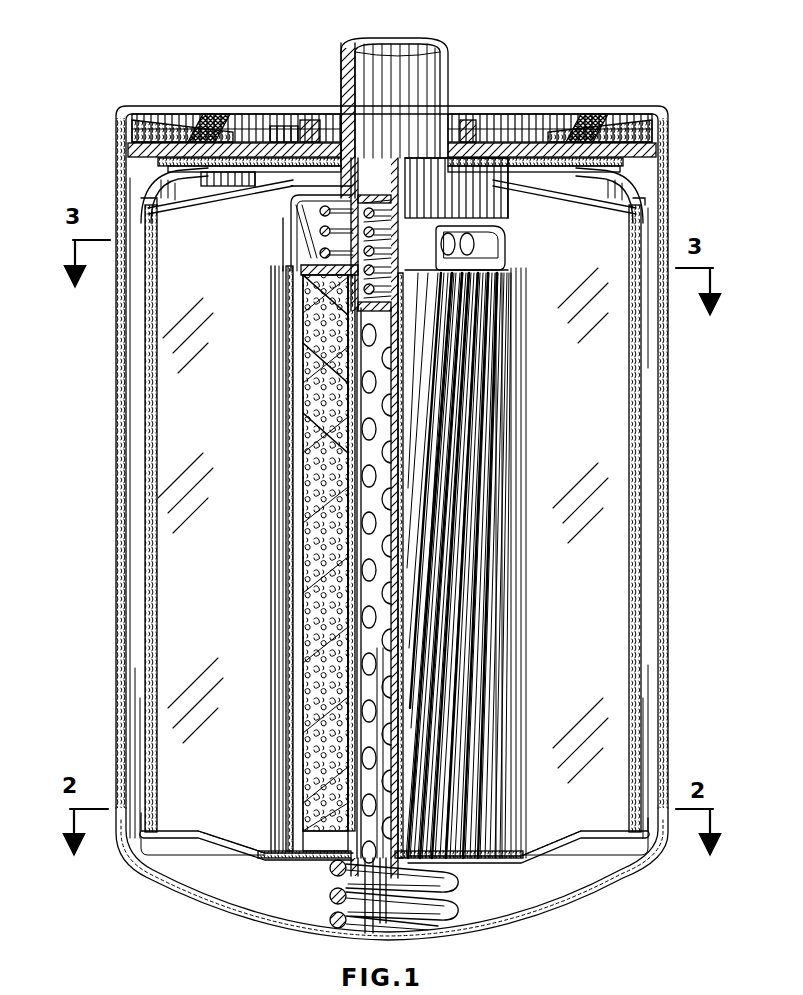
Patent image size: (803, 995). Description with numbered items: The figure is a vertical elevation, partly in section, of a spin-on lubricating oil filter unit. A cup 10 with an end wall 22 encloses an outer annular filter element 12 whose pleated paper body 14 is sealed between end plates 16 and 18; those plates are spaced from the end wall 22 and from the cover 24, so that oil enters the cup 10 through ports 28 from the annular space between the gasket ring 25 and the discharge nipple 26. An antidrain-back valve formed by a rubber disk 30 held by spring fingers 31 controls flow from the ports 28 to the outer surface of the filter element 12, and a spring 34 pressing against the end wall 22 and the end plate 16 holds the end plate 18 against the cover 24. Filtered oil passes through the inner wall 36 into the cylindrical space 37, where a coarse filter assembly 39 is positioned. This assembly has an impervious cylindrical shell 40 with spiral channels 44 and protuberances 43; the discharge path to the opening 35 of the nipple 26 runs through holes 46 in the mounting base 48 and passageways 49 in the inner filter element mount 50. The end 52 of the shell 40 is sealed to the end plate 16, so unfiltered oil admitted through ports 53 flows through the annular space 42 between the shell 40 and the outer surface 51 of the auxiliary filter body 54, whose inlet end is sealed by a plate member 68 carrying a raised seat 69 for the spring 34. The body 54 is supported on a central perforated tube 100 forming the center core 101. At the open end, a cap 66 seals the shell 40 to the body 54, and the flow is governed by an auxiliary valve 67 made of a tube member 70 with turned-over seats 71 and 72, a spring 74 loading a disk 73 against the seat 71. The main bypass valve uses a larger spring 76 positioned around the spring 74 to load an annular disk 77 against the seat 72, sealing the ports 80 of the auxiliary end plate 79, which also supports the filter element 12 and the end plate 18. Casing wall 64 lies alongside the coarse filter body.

The cup 10 is at (661, 458).
The outer filter element 12 is at (640, 522).
The pleated paper body 14 is at (585, 620).
The end plate 16 is at (572, 838).
The end plate 18 is at (628, 188).
The end wall 22 is at (547, 905).
The cover 24 is at (655, 142).
The gasket ring 25 is at (566, 108).
The discharge nipple 26 is at (442, 58).
The ports 28 is at (300, 132).
The rubber disk 30 is at (612, 162).
The spring fingers 31 is at (165, 175).
The spring 34 is at (448, 895).
The opening 35 is at (340, 132).
The inner wall 36 is at (578, 662).
The cylindrical space 37 is at (266, 412).
The coarse filter assembly 39 is at (274, 546).
The cylindrical shell 40 is at (276, 512).
The annular space 42 is at (300, 633).
The protuberances 43 is at (490, 428).
The spiral channels 44 is at (455, 367).
The holes 46 is at (498, 238).
The mounting base 48 is at (478, 205).
The passageways 49 is at (436, 232).
The inner filter element mount 50 is at (292, 258).
The outer surface 51 is at (302, 722).
The end of cylindrical shell 52 is at (280, 860).
The ports 53 is at (308, 852).
The auxiliary filter body 54 is at (318, 602).
The casing wall 64 is at (275, 312).
The cap 66 is at (272, 282).
The auxiliary spring-loaded valve 67 is at (286, 213).
The plate member 68 is at (498, 855).
The raised seat 69 is at (367, 868).
The tube member 70 is at (290, 222).
The seat 71 is at (300, 360).
The seat 72 is at (356, 190).
The disk 73 is at (397, 318).
The spring 74 is at (300, 325).
The spring 76 is at (290, 187).
The annular disk 77 is at (318, 132).
The auxiliary end plate 79 is at (282, 134).
The ports 80 is at (300, 132).
The central perforated tube 100 is at (365, 496).
The center core 101 is at (365, 685).